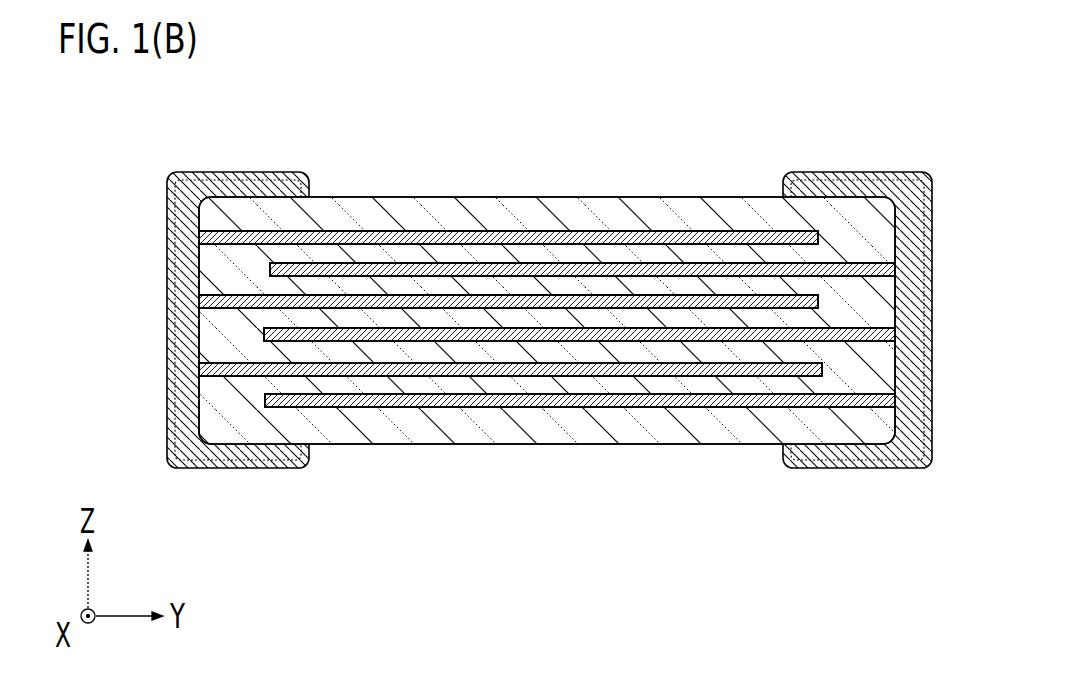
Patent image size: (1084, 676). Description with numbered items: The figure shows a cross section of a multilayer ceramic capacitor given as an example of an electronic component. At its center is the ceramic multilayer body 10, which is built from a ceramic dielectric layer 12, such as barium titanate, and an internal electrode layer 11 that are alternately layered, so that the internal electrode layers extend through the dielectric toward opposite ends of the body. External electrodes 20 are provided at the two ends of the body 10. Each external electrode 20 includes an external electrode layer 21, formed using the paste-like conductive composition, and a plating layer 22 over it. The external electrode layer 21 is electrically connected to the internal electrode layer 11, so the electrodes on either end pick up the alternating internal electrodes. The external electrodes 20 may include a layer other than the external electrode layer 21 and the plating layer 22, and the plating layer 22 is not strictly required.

The ceramic multilayer body 10 is at (515, 316).
The internal electrode layer 11 is at (493, 231).
The ceramic dielectric layer 12 is at (652, 213).
The external electrode 20 is at (515, 316).
The external electrode layer 21 is at (235, 193).
The plating layer 22 is at (250, 467).